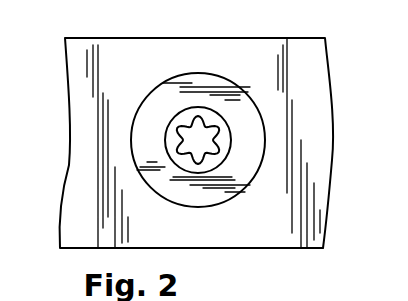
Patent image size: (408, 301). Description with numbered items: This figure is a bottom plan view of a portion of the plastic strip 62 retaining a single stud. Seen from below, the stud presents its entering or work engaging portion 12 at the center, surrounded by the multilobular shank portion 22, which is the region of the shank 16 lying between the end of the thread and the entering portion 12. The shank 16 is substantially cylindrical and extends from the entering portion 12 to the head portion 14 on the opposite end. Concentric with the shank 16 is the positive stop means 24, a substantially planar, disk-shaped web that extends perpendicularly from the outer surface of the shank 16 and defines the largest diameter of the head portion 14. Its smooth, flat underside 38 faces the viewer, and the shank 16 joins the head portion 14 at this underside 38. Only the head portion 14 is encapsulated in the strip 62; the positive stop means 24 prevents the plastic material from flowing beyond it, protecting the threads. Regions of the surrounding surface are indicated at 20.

The strip 62 is at (139, 38).
The positive stop means 24 is at (251, 86).
The underside 38 is at (175, 117).
The shank 16 is at (232, 126).
The multilobular shank portion 22 is at (208, 150).
The entering portion 12 is at (179, 143).
The head portion 14 is at (232, 152).
The washer surfaces 20 is at (168, 160).